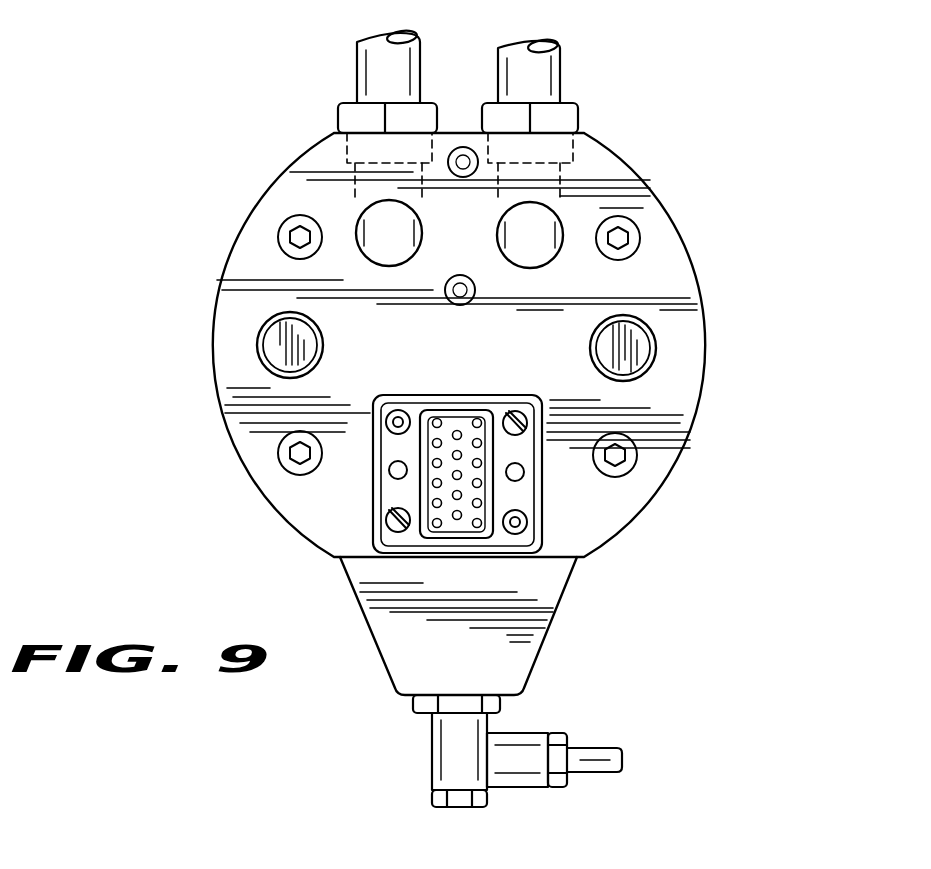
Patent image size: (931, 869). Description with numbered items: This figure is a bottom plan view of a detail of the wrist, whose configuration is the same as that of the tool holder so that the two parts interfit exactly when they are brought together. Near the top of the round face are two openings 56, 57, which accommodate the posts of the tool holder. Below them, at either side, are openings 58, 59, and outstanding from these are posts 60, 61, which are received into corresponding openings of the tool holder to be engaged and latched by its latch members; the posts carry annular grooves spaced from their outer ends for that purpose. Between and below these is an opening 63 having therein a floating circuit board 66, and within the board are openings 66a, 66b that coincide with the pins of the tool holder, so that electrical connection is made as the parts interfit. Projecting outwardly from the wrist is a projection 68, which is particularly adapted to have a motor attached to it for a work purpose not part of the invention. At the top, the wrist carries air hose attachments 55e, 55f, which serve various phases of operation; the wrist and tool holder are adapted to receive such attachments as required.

The air hose attachment 55e is at (370, 68).
The air hose attachment 55f is at (553, 72).
The opening 56 is at (353, 222).
The opening 57 is at (560, 221).
The opening 58 is at (257, 350).
The opening 59 is at (653, 358).
The post 60 is at (300, 347).
The post 61 is at (610, 355).
The opening 63 is at (593, 540).
The floating circuit board 66 is at (373, 537).
The opening 66a is at (387, 473).
The opening 66b is at (522, 473).
The projection 68 is at (532, 658).